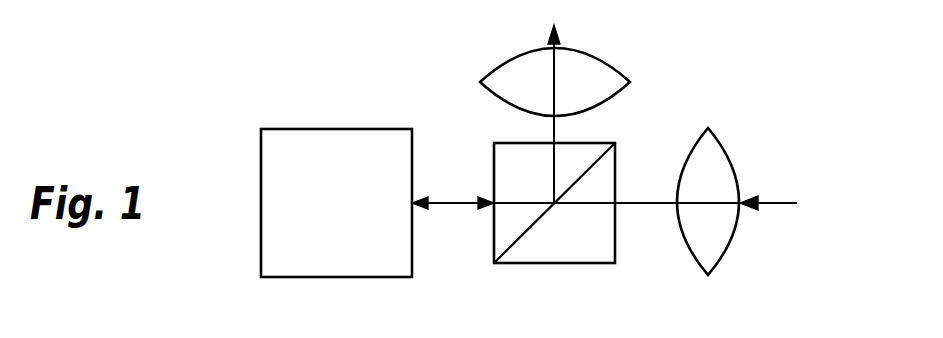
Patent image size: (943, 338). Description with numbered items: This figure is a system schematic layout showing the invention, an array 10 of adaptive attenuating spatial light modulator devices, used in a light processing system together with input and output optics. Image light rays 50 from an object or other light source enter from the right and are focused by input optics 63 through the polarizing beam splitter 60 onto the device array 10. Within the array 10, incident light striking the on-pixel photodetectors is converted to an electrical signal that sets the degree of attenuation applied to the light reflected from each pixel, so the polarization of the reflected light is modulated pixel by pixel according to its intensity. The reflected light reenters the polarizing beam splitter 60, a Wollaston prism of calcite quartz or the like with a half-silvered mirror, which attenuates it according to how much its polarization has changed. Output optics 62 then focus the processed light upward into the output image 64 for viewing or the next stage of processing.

The array of adaptive attenuating spatial light modulator devices 10 is at (282, 130).
The image light rays 50 is at (768, 198).
The polarizing beam splitter 60 is at (494, 148).
The output optics 62 is at (600, 72).
The input optics 63 is at (727, 148).
The output image 64 is at (548, 39).